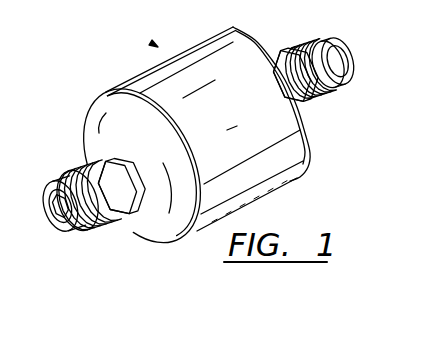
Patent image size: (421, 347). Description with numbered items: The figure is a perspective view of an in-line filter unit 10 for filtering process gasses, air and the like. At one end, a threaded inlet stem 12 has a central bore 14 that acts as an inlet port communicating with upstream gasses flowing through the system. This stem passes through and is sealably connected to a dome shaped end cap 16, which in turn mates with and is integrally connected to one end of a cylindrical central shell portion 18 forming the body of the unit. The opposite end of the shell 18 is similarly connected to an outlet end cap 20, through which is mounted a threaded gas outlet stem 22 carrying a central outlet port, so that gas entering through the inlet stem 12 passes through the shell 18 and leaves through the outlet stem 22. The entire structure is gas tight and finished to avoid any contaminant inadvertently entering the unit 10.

The filter unit 10 is at (153, 44).
The threaded inlet stem 12 is at (78, 232).
The central bore 14 is at (56, 229).
The dome shaped end cap 16 is at (151, 236).
The cylindrical central shell portion 18 is at (274, 183).
The outlet end cap 20 is at (310, 132).
The threaded gas outlet stem 22 is at (350, 80).